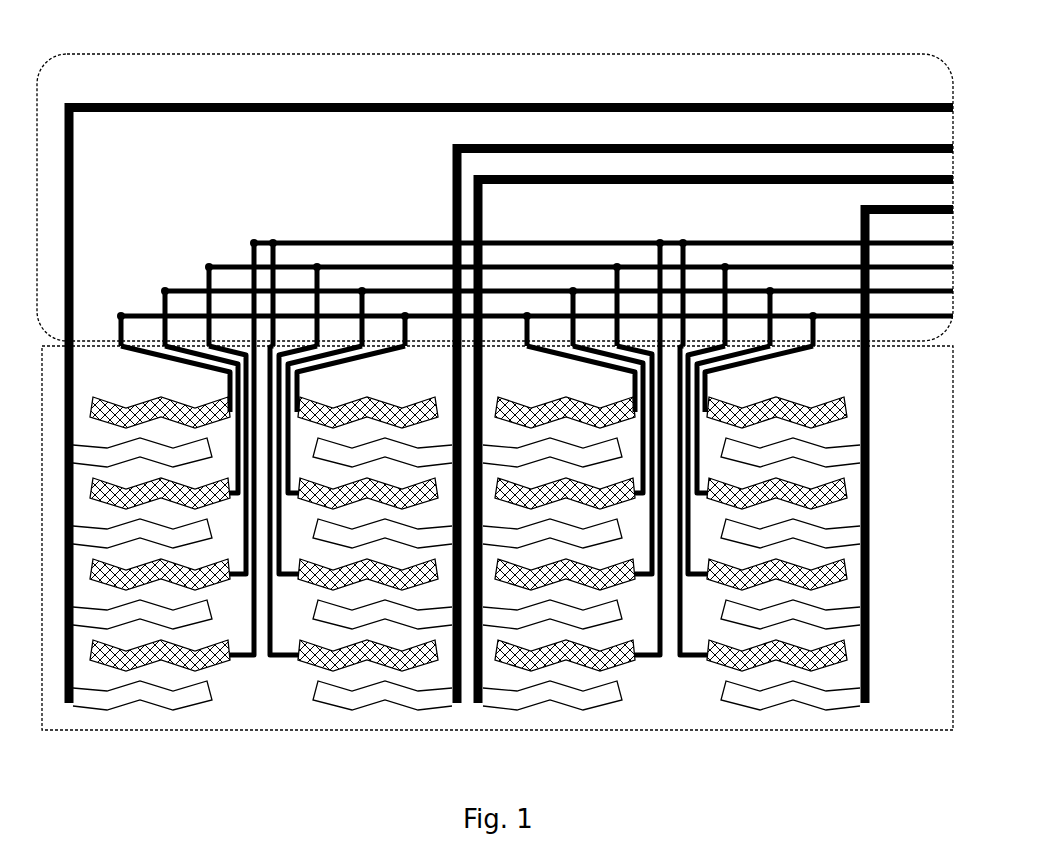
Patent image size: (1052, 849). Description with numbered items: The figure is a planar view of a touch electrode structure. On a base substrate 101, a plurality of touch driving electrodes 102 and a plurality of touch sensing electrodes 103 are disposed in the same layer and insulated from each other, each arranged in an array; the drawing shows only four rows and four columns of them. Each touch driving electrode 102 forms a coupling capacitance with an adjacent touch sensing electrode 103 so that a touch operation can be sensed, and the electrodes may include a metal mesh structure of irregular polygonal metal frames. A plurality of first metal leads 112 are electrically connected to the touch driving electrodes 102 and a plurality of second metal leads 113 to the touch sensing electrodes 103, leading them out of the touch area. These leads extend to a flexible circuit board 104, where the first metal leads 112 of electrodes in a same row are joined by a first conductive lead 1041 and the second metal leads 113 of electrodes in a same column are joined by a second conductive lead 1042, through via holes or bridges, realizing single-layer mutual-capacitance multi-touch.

The base substrate 101 is at (497, 568).
The touch driving electrode 102 is at (472, 593).
The touch sensing electrode 103 is at (466, 614).
The flexible circuit board 104 is at (495, 179).
The first conductive lead 1041 is at (509, 360).
The second conductive lead 1042 is at (535, 182).
The first metal lead 112 is at (467, 568).
The second metal lead 113 is at (703, 467).